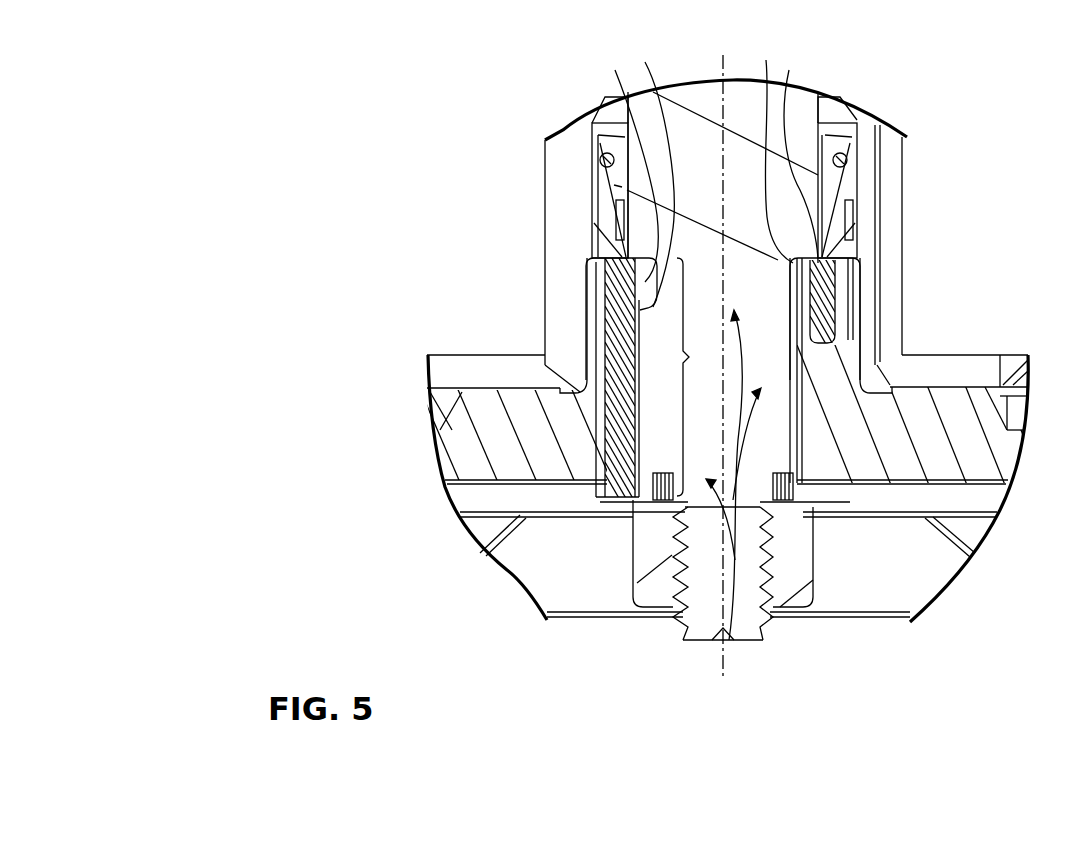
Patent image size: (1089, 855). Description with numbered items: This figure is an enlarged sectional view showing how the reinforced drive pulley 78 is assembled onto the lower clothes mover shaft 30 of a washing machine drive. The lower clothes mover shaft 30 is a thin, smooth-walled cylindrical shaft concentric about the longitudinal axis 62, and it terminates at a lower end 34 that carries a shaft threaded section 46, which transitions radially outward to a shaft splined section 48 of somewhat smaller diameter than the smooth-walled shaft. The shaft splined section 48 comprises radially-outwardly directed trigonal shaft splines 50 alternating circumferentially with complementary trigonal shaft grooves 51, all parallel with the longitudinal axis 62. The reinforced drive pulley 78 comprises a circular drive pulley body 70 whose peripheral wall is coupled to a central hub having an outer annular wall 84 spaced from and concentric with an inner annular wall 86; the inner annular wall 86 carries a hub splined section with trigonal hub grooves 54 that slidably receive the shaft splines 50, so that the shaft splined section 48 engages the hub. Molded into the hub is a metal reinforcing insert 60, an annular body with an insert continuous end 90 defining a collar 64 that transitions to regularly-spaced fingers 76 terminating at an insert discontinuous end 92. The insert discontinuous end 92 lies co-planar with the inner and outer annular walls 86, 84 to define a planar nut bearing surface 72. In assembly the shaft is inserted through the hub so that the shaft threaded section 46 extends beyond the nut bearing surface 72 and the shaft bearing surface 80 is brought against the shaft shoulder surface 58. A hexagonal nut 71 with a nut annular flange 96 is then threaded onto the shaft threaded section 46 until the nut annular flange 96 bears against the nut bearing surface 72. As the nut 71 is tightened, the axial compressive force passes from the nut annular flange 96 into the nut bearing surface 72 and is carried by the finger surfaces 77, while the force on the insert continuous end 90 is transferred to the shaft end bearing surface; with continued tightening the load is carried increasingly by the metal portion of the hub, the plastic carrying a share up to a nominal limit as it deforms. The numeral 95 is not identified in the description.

The lower clothes mover shaft 30 is at (800, 178).
The lower end 34 is at (727, 640).
The shaft threaded section 46 is at (700, 587).
The shaft splined section 48 is at (696, 377).
The shaft splines 50 is at (590, 308).
The shaft grooves 51 is at (790, 432).
The hub grooves 54 is at (607, 373).
The shaft shoulder surface 58 is at (708, 159).
The reinforcing insert 60 is at (583, 447).
The longitudinal axis 62 is at (590, 293).
The collar 64 is at (847, 316).
The drive pulley body 70 is at (968, 443).
The nut 71 is at (820, 577).
The nut bearing surface 72 is at (817, 515).
The fingers 76 is at (597, 413).
The finger surfaces 77 is at (652, 505).
The reinforced drive pulley 78 is at (997, 351).
The shaft bearing surface 80 is at (607, 262).
The outer annular wall 84 is at (603, 282).
The inner annular wall 86 is at (977, 275).
The insert continuous end 90 is at (799, 157).
The insert discontinuous end 92 is at (630, 513).
The band 95 is at (803, 512).
The nut annular flange 96 is at (655, 503).